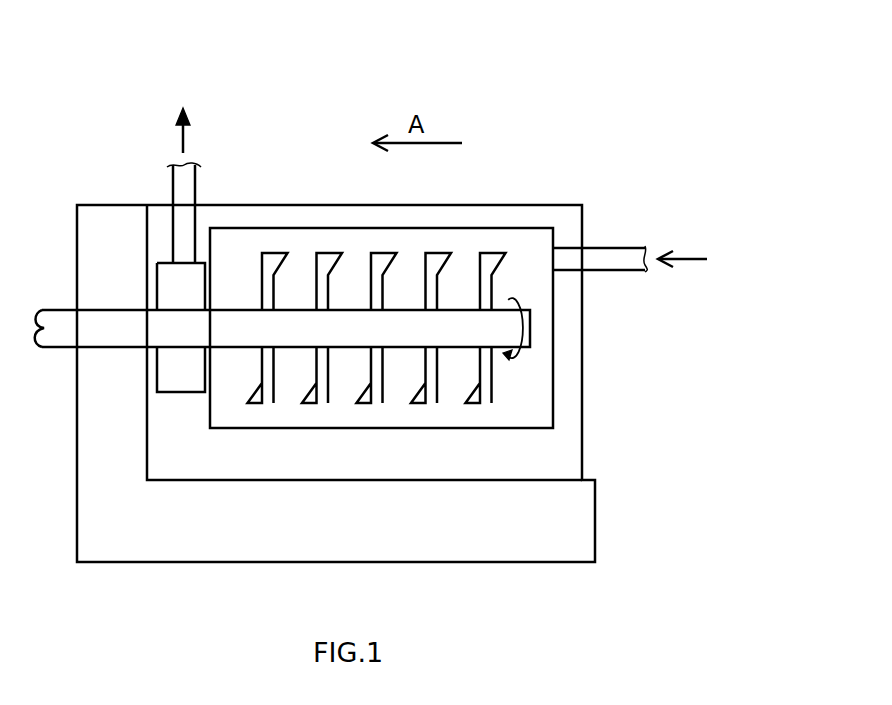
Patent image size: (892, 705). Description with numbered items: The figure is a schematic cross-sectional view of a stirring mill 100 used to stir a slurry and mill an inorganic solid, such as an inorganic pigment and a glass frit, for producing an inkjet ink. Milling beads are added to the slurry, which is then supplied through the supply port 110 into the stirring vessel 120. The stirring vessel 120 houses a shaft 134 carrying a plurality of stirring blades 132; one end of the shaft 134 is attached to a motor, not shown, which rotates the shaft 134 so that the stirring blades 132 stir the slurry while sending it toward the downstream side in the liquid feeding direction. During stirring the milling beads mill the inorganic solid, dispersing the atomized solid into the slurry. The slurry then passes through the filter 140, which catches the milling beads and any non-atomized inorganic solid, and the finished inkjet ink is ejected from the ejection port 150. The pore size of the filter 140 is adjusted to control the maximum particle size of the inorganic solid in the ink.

The stirring mill 100 is at (620, 95).
The supply port 110 is at (608, 258).
The stirring vessel 120 is at (493, 219).
The stirring blades 132 is at (320, 260).
The shaft 134 is at (232, 318).
The filter 140 is at (207, 388).
The ejection port 150 is at (185, 192).